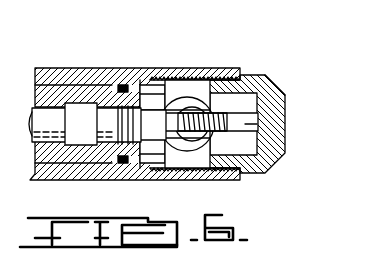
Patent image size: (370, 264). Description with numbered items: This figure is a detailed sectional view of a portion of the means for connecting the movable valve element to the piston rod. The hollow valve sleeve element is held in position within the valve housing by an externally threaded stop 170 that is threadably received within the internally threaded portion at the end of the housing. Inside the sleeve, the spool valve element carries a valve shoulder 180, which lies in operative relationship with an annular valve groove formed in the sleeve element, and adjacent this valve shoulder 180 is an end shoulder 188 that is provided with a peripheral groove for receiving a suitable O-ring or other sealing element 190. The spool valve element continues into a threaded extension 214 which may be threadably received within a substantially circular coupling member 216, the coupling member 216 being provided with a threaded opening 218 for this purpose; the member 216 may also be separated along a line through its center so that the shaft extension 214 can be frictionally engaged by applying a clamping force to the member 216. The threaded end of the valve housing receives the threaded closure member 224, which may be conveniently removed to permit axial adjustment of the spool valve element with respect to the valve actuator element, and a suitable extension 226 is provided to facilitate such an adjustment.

The externally threaded stop 170 is at (172, 70).
The valve shoulder 180 is at (80, 105).
The end shoulder 188 is at (111, 146).
The sealing element 190 is at (138, 107).
The threaded extension 214 is at (190, 112).
The coupling member 216 is at (180, 181).
The threaded opening 218 is at (218, 85).
The threaded closure member 224 is at (268, 90).
The extension 226 is at (252, 138).